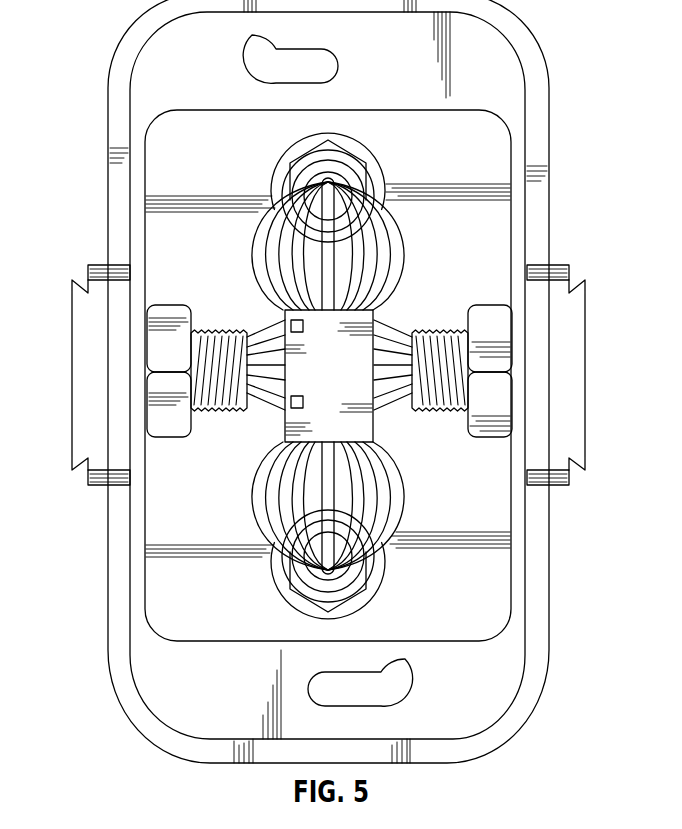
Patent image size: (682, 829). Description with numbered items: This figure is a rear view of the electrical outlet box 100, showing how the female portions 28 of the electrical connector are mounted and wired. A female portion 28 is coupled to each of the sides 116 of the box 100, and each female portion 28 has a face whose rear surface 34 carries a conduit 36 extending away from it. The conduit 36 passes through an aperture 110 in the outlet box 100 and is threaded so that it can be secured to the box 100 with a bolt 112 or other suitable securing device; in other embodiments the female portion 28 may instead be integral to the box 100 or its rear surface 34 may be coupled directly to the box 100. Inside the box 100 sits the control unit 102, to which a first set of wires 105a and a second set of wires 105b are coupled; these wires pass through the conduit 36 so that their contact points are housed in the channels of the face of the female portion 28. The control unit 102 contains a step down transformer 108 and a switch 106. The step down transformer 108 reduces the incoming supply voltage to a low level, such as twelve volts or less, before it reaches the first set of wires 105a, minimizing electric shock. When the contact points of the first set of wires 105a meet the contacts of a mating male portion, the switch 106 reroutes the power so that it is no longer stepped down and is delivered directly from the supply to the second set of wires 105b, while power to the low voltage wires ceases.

The female portion 28 is at (62, 404).
The rear surface 34 is at (143, 463).
The conduit 36 is at (219, 338).
The electrical outlet box 100 is at (524, 41).
The control unit 102 is at (341, 378).
The first set of wires 105a is at (392, 244).
The second set of wires 105b is at (318, 212).
The switch 106 is at (305, 405).
The step down transformer 108 is at (292, 325).
The aperture 110 is at (162, 444).
The bolt 112 is at (156, 357).
The sides 116 is at (108, 193).